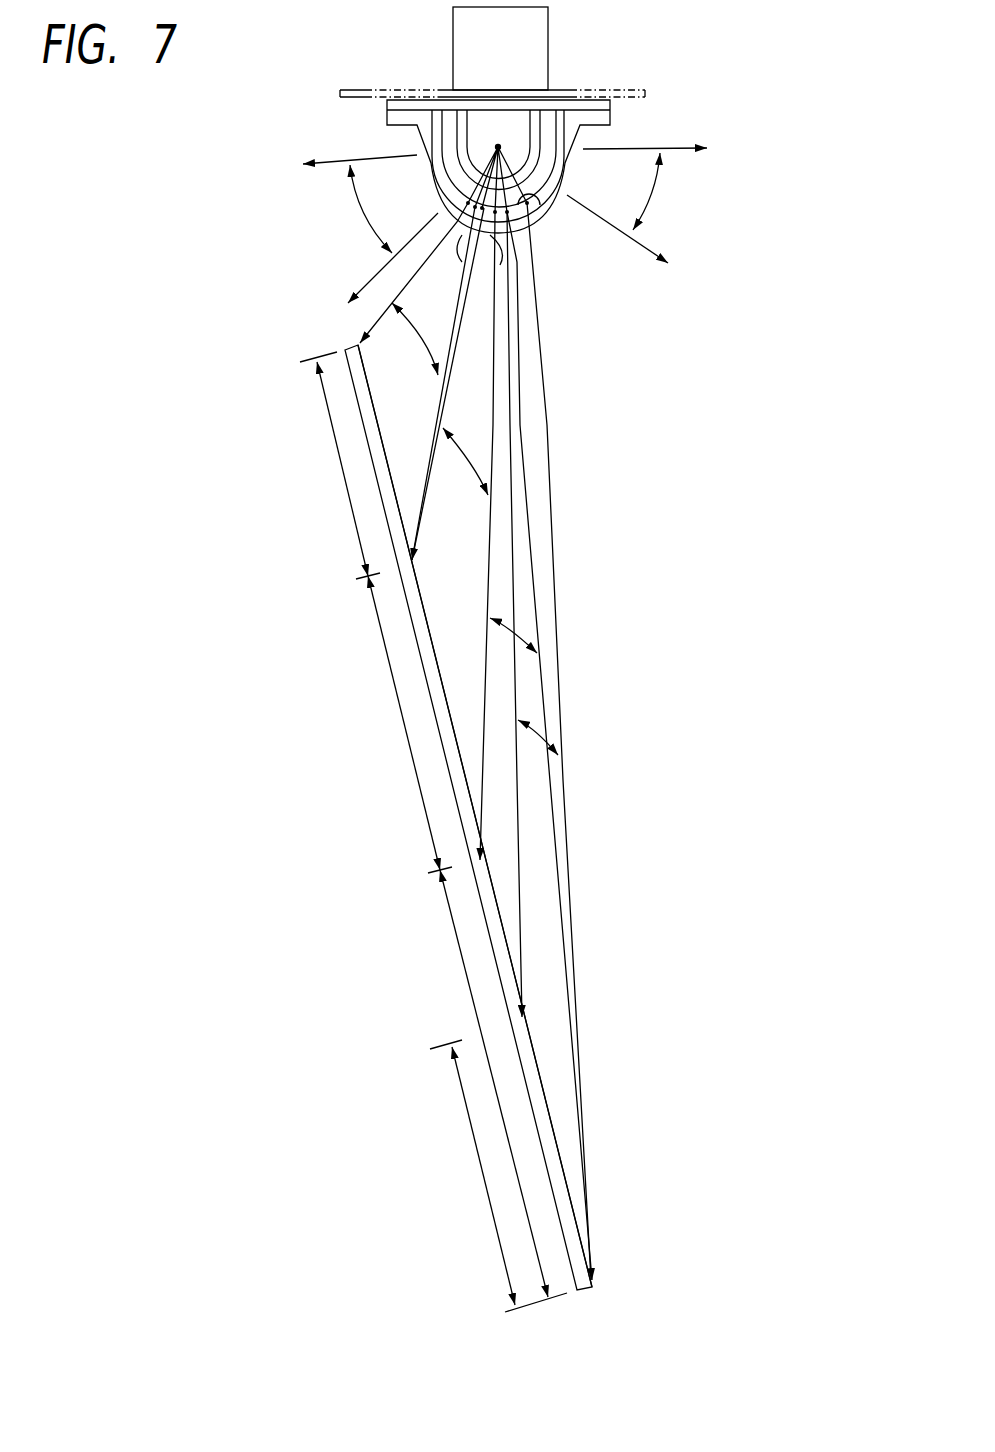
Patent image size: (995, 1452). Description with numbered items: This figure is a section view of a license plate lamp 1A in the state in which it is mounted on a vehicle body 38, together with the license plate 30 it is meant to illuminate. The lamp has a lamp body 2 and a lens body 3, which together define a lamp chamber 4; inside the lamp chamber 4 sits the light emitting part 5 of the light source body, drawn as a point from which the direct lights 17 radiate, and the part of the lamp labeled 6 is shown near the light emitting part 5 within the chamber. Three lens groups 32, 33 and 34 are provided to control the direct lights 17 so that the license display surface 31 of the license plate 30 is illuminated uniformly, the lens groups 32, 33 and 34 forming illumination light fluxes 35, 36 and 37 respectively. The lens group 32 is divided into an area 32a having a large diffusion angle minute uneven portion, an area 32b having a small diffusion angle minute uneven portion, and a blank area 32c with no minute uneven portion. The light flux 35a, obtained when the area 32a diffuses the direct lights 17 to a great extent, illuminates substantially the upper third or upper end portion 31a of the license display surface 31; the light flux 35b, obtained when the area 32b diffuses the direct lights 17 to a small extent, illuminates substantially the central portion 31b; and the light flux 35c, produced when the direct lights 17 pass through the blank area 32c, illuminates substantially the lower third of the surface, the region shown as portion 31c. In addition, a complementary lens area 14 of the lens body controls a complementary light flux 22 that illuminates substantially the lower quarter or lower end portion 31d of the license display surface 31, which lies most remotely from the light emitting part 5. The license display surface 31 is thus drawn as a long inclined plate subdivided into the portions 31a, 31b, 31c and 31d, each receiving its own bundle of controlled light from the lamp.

The license plate lamp 1A is at (733, 83).
The lamp body 2 is at (548, 42).
The lens body 3 is at (583, 132).
The lamp chamber 4 is at (445, 123).
The light emitting part 5 is at (498, 142).
The inner cup 6 is at (532, 133).
The complementary lens area 14 is at (553, 205).
The direct lights 17 is at (464, 112).
The complementary light flux 22 is at (537, 733).
The license plate 30 is at (357, 398).
The license display surface 31 is at (376, 422).
The upper end portion 31a is at (347, 485).
The central portion 31b is at (392, 665).
The third region of reflecting surface 31c is at (461, 945).
The lower end portion 31d is at (468, 1110).
The lens group 32 is at (722, 290).
The area having a large diffusion angle minute uneven portion 32a is at (455, 300).
The area having a small diffusion angle minute uneven portion 32b is at (470, 280).
The blank area 32c is at (495, 233).
The lens group 33 is at (425, 175).
The lens group 34 is at (572, 168).
The illumination light flux 35 is at (694, 403).
The light flux 35a is at (422, 347).
The light flux 35b is at (467, 465).
The light flux 35c is at (510, 630).
The illumination light flux 36 is at (362, 207).
The illumination light flux 37 is at (653, 183).
The vehicle body 38 is at (352, 88).